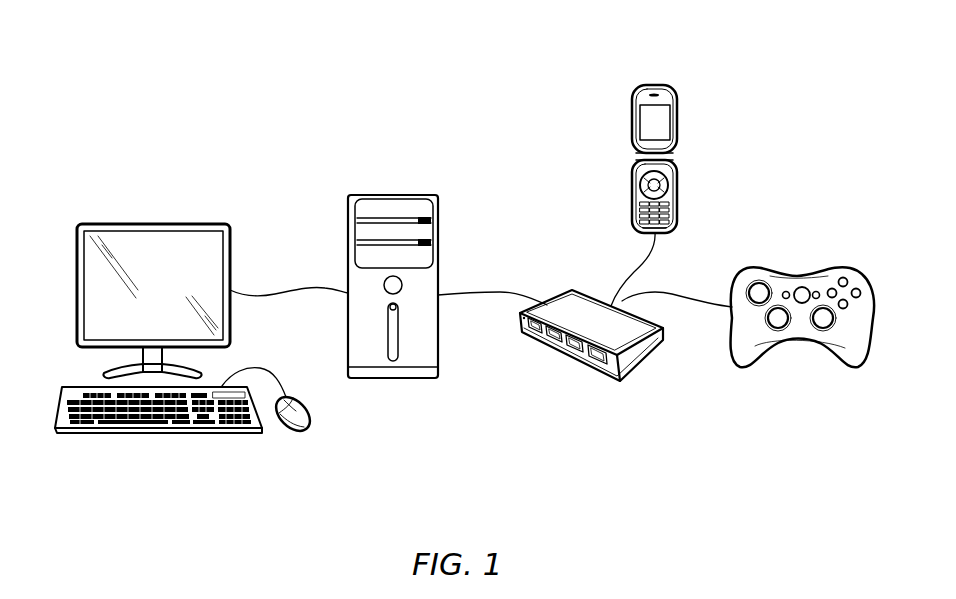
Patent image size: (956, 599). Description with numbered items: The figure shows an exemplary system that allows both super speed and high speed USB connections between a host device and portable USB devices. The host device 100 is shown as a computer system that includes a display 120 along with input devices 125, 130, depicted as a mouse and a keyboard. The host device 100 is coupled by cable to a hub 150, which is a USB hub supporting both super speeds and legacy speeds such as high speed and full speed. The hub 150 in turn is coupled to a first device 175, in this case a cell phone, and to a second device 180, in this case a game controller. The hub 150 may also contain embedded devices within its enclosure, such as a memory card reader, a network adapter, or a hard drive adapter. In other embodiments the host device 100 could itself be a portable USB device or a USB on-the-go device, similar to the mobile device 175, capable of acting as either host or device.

The host device 100 is at (406, 195).
The display 120 is at (137, 225).
The input device 125 is at (304, 428).
The input device 130 is at (177, 434).
The hub 150 is at (619, 382).
The first device 175 is at (656, 85).
The second device 180 is at (803, 277).